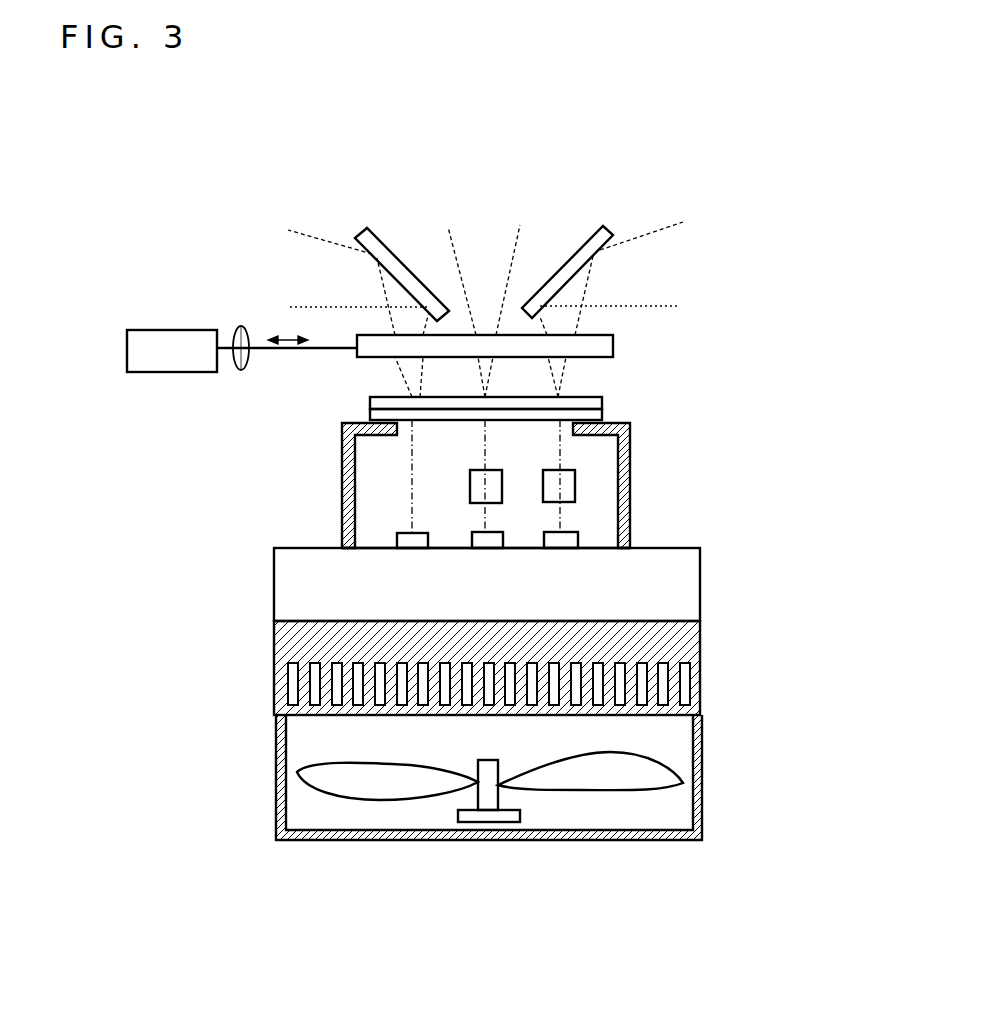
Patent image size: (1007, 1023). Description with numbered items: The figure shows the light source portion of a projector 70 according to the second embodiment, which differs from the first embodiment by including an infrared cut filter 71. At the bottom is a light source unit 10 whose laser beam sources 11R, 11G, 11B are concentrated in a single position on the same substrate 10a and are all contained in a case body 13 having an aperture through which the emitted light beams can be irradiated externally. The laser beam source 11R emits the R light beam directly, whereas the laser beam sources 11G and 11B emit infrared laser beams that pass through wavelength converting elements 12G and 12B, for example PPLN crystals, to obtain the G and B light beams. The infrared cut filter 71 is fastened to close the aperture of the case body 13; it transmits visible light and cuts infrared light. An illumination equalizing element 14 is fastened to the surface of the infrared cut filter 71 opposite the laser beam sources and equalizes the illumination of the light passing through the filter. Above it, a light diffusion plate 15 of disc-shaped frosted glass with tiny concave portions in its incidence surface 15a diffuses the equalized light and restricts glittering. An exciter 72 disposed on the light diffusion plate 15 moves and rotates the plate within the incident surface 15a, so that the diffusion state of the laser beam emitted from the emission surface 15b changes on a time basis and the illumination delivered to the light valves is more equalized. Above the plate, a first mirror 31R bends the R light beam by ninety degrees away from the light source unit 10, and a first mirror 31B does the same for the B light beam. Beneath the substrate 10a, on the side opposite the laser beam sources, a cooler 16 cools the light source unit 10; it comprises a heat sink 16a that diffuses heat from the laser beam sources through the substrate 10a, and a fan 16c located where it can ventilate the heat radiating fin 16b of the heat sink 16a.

The projector 70 is at (740, 122).
The first mirror 31R is at (372, 231).
The first mirror 31B is at (594, 229).
The light diffusion plate 15 is at (357, 347).
The incidence surface 15a is at (613, 352).
The emission surface 15b is at (603, 334).
The exciter 72 is at (176, 373).
The illumination equalizing element 14 is at (602, 401).
The infrared cut filter 71 is at (602, 419).
The light source unit 10 is at (631, 455).
The case body 13 is at (631, 503).
The laser beam source 11R is at (405, 540).
The laser beam source 11G is at (473, 540).
The laser beam source 11B is at (570, 539).
The wavelength converting element 12G is at (470, 487).
The wavelength converting element 12B is at (543, 487).
The substrate 10a is at (700, 580).
The cooler 16 is at (770, 720).
The heat sink 16a is at (700, 655).
The heat radiating fin 16b is at (280, 685).
The fan 16c is at (700, 780).